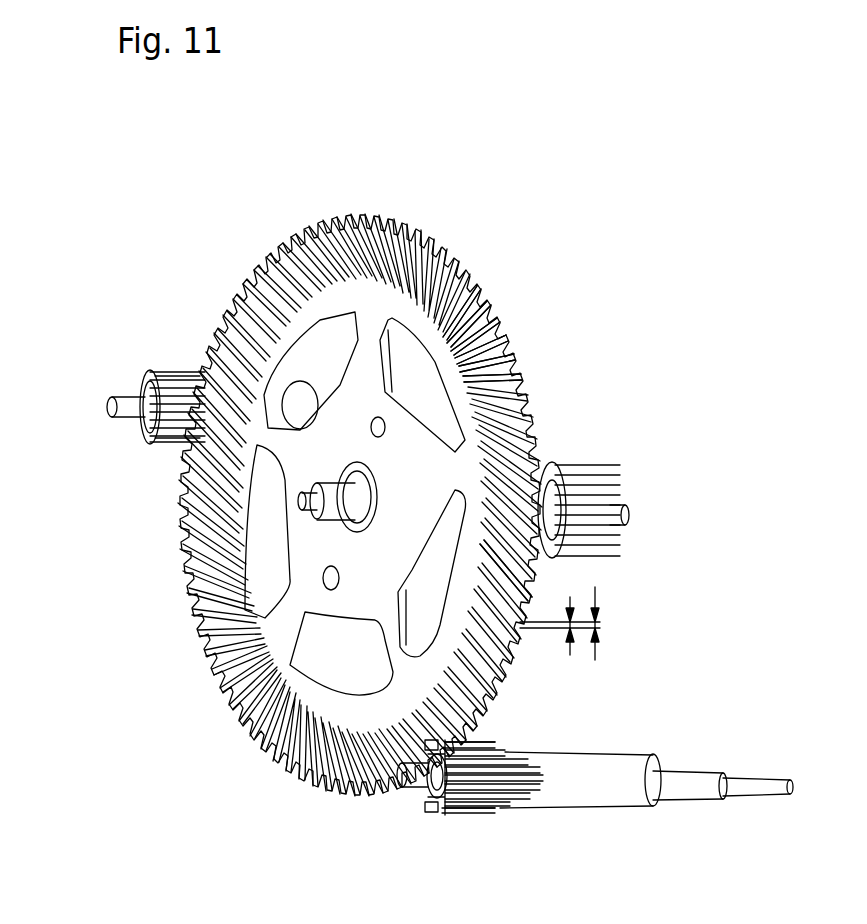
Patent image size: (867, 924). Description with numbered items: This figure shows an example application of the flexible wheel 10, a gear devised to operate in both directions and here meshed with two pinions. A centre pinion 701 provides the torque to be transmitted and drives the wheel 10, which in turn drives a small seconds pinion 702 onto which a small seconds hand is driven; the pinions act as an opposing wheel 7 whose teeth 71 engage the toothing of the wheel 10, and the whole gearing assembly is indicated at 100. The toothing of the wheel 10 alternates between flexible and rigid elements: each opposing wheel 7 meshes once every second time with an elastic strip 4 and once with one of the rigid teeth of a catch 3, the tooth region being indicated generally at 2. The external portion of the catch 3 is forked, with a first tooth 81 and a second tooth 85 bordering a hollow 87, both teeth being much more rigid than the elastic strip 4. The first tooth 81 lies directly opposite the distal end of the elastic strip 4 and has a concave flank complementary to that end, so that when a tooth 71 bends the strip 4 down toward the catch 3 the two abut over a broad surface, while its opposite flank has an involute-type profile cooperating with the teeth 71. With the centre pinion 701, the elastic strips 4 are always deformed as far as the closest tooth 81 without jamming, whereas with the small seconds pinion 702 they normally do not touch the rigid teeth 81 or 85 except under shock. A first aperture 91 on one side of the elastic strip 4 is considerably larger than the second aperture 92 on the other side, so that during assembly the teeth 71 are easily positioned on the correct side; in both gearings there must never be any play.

The flexible wheel 10 is at (592, 348).
The tooth 2 is at (512, 318).
The catch 3 is at (480, 336).
The elastic strip 4 is at (473, 310).
The first tooth 81 is at (507, 353).
The second tooth 85 is at (520, 357).
The hollow 87 is at (523, 373).
The opposing wheel 7 is at (113, 438).
The tooth 71 is at (162, 386).
The centre pinion 701 is at (178, 372).
The small seconds pinion 702 is at (422, 802).
The gear arrangement 100 is at (512, 733).
The first aperture 91 is at (572, 623).
The second aperture 92 is at (555, 626).